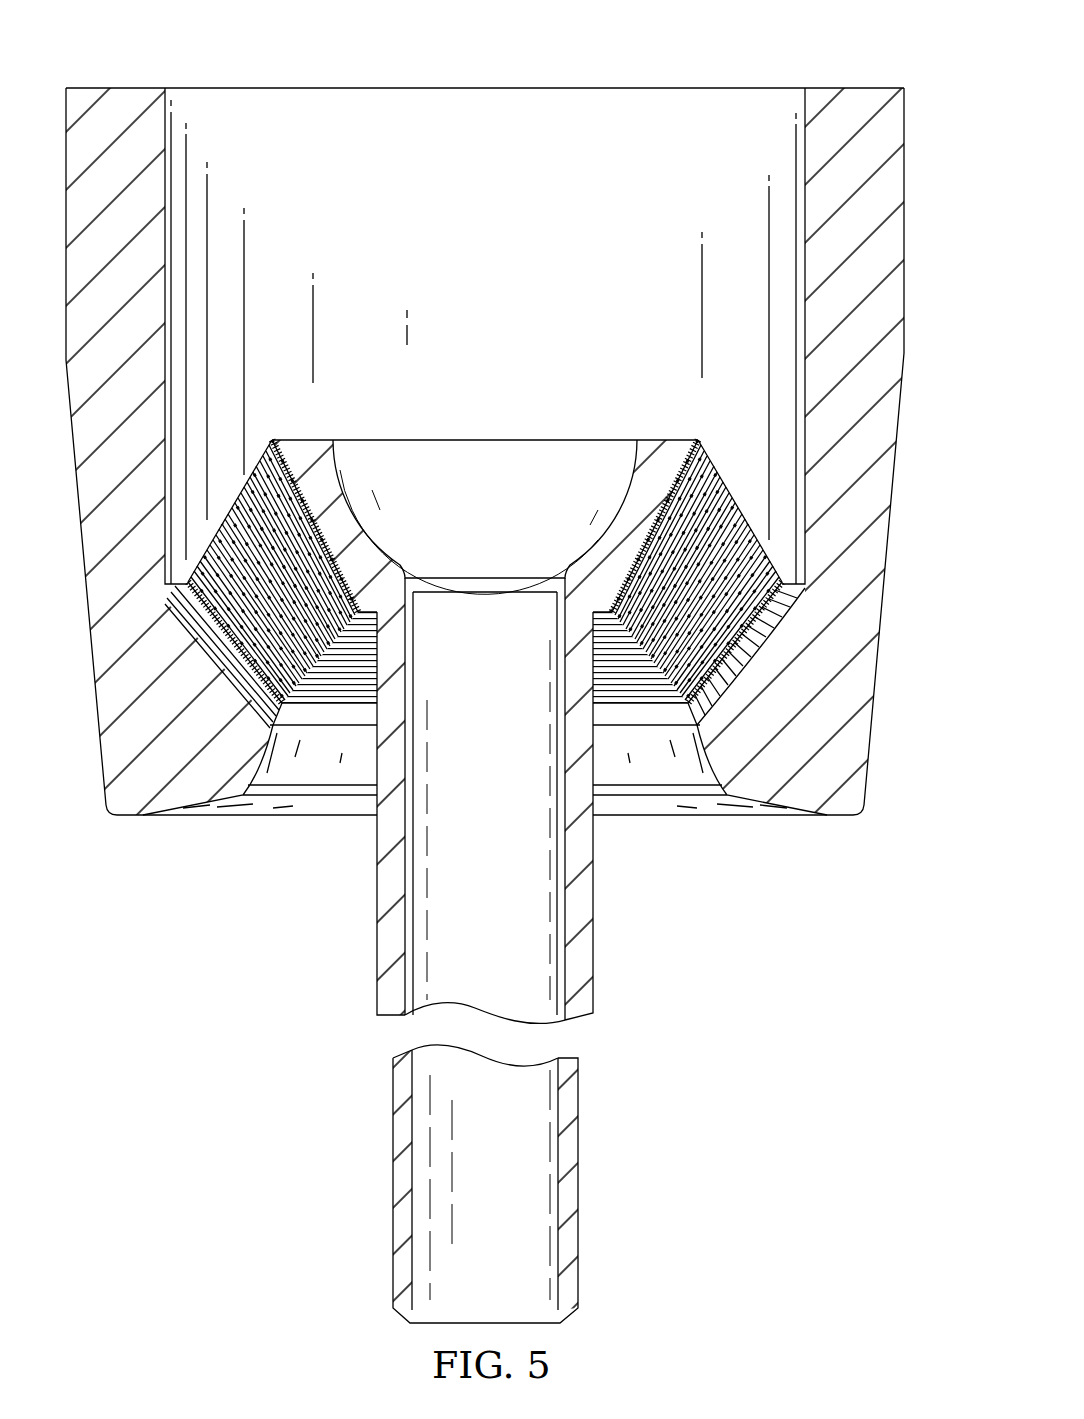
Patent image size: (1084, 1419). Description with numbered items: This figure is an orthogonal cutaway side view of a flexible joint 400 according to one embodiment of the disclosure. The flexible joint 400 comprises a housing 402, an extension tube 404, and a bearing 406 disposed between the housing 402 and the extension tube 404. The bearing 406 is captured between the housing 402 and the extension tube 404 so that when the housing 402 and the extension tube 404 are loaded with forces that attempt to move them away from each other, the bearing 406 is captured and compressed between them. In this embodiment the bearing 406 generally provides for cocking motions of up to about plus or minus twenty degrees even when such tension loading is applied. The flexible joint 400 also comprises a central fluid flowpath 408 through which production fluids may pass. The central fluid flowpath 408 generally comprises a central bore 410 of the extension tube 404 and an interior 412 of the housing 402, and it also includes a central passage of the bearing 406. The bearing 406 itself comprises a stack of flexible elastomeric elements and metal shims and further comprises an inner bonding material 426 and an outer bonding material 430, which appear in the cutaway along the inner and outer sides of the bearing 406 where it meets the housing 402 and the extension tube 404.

The flexible joint 400 is at (593, 68).
The housing 402 is at (872, 684).
The extension tube 404 is at (580, 1183).
The bearing 406 is at (226, 506).
The central fluid flowpath 408 is at (509, 459).
The central bore 410 is at (506, 946).
The interior 412 is at (507, 261).
The inner bonding material 426 is at (278, 455).
The outer bonding material 430 is at (206, 665).